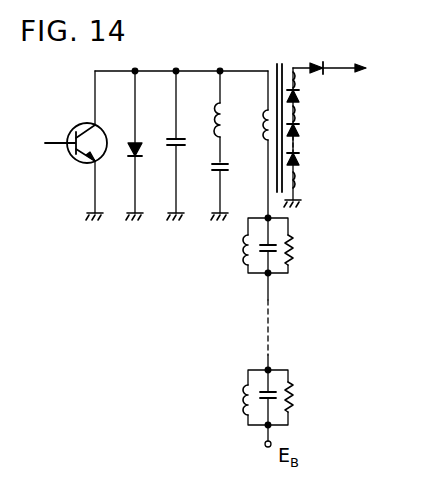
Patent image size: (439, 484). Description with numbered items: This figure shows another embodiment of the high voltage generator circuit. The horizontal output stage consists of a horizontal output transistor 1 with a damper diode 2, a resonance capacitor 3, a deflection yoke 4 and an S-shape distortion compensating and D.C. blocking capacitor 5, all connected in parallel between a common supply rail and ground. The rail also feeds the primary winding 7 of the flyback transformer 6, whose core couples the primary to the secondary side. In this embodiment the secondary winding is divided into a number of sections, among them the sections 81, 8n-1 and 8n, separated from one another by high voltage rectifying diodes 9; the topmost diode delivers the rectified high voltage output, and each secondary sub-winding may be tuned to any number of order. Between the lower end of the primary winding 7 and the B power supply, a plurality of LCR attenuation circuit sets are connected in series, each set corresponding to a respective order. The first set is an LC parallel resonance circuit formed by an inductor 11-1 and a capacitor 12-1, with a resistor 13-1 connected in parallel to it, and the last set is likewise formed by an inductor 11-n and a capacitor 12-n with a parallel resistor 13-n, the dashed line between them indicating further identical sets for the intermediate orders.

The horizontal output transistor 1 is at (75, 126).
The damper diode 2 is at (131, 142).
The resonance capacitor 3 is at (173, 139).
The deflection yoke 4 is at (214, 128).
The S-shape distortion compensating and D.C. blocking capacitor 5 is at (214, 170).
The flyback transformer 6 is at (285, 61).
The primary winding 7 is at (264, 128).
The secondary winding section 8n is at (300, 80).
The secondary winding section 8n-1 is at (300, 113).
The secondary winding section 81 is at (301, 184).
The high voltage rectifying diode 9 is at (319, 62).
The inductor 11-1 is at (246, 251).
The capacitor 12-1 is at (262, 268).
The resistor 13-1 is at (296, 248).
The inductor 11-n is at (248, 402).
The capacitor 12-n is at (262, 422).
The resistor 13-n is at (296, 400).